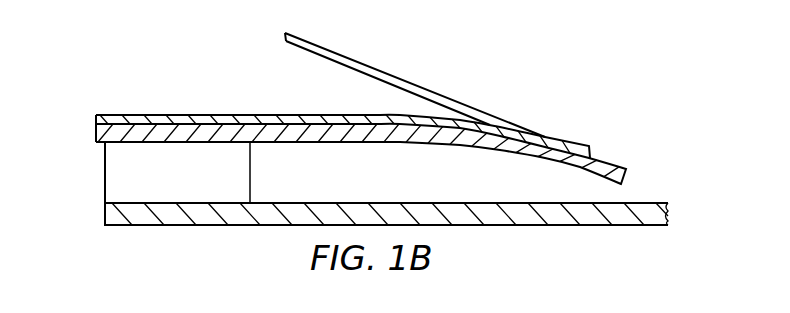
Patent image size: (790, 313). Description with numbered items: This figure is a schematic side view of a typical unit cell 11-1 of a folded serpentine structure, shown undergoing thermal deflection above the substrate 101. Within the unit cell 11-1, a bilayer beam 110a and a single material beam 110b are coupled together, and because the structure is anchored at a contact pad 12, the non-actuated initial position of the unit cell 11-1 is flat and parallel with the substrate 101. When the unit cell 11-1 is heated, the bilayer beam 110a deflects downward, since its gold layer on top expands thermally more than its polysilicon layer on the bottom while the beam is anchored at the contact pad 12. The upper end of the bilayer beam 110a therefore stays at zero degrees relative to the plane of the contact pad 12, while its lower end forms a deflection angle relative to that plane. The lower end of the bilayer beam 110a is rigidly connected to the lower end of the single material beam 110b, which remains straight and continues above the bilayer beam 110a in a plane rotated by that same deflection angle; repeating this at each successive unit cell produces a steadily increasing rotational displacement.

The unit cell 11-1 is at (156, 69).
The contact pad 12 is at (115, 172).
The substrate 101 is at (598, 213).
The bilayer beam 110a is at (600, 168).
The single material beam 110b is at (392, 78).